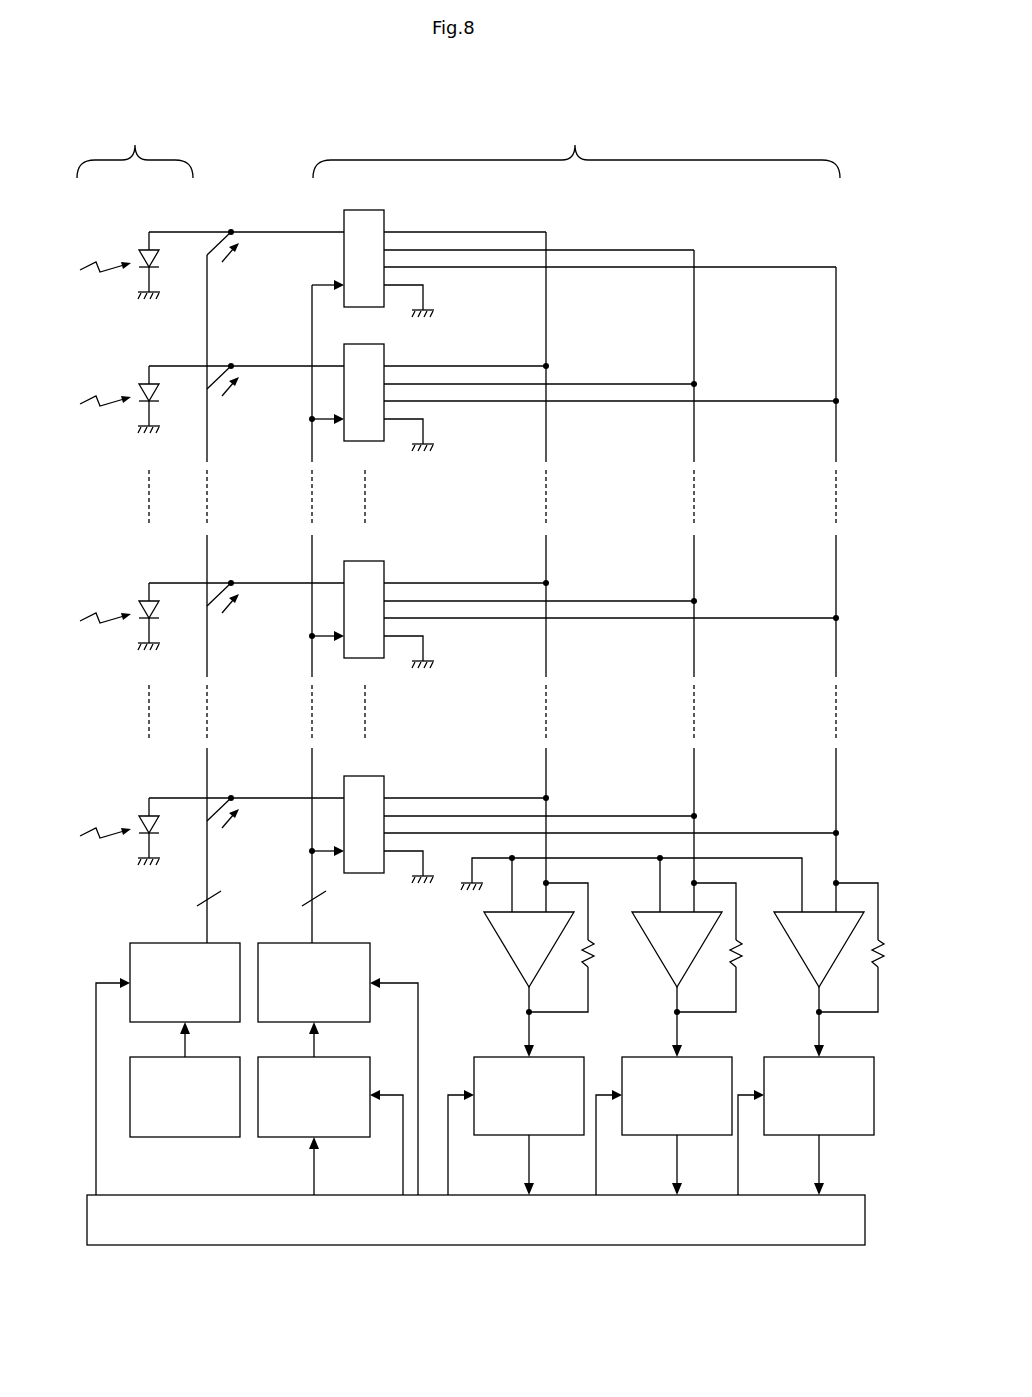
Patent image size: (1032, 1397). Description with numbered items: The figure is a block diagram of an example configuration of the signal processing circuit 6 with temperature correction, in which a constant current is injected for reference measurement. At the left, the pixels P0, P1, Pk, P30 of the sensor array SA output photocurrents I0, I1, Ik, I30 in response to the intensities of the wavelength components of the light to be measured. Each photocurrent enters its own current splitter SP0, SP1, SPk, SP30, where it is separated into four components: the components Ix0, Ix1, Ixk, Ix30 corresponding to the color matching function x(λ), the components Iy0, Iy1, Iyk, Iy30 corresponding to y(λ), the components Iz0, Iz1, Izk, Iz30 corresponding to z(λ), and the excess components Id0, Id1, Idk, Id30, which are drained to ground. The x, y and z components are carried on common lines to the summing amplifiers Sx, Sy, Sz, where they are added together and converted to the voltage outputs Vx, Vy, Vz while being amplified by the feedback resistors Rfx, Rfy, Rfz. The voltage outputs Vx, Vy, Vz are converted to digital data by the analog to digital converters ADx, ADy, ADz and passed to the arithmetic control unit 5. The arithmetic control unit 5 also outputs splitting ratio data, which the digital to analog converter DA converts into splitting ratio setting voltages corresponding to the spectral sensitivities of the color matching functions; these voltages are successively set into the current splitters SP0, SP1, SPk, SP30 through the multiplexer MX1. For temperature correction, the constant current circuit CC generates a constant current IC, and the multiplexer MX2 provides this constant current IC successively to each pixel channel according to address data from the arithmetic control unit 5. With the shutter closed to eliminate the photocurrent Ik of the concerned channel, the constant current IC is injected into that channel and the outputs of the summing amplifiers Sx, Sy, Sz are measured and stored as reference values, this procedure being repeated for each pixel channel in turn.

The sensor array SA is at (135, 147).
The signal processing circuit 6 is at (576, 147).
The photocurrent I0 is at (186, 220).
The photocurrent I1 is at (246, 345).
The photocurrent Ik is at (246, 562).
The photocurrent I30 is at (246, 777).
The pixel P0 is at (162, 265).
The pixel P1 is at (162, 399).
The pixel Pk is at (162, 616).
The pixel P30 is at (168, 831).
The current splitter SP0 is at (378, 223).
The current splitter SP1 is at (385, 380).
The current splitter SPk is at (385, 597).
The current splitter SP30 is at (391, 812).
The current component Ix0 is at (521, 218).
The current component Ix1 is at (466, 348).
The current component Ixk is at (466, 565).
The current component Ix30 is at (466, 780).
The current component Iy0 is at (666, 236).
The current component Iy1 is at (540, 366).
The current component Iyk is at (540, 583).
The current component Iy30 is at (540, 798).
The current component Iz0 is at (812, 253).
The current component Iz1 is at (611, 383).
The current component Izk is at (611, 600).
The current component Iz30 is at (611, 815).
The excess component Id0 is at (433, 277).
The excess component Id1 is at (426, 429).
The excess component Idk is at (426, 646).
The excess component Id30 is at (432, 861).
The multiplexer MX2 is at (130, 958).
The multiplexer MX1 is at (370, 958).
The constant current circuit CC is at (185, 1137).
The constant current IC is at (205, 1036).
The digital to analog converter DA is at (370, 1078).
The summing amplifier Sx is at (517, 943).
The summing amplifier Sy is at (667, 956).
The summing amplifier Sz is at (809, 956).
The feedback resistor Rfx is at (579, 947).
The feedback resistor Rfy is at (727, 947).
The feedback resistor Rfz is at (868, 947).
The voltage output Vx is at (530, 1021).
The voltage output Vy is at (694, 1022).
The voltage output Vz is at (836, 1022).
The analog to digital converter ADx is at (574, 1068).
The analog to digital converter ADy is at (693, 1083).
The analog to digital converter ADz is at (834, 1083).
The arithmetic control unit 5 is at (490, 1245).